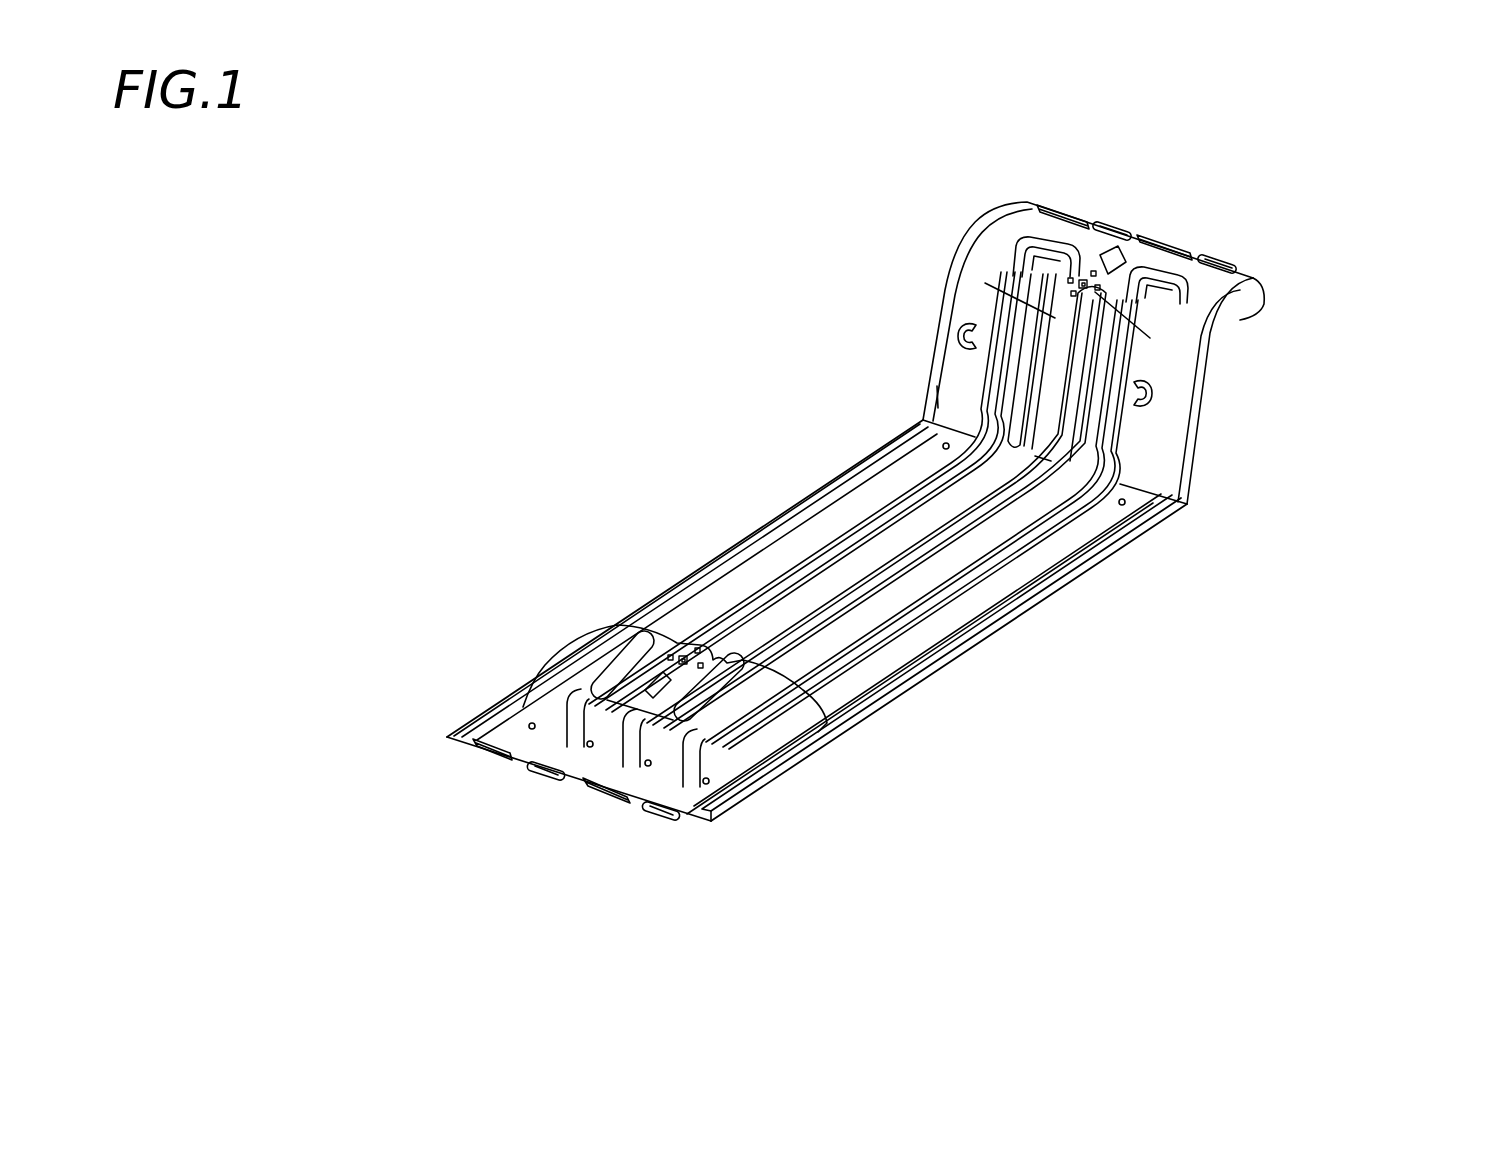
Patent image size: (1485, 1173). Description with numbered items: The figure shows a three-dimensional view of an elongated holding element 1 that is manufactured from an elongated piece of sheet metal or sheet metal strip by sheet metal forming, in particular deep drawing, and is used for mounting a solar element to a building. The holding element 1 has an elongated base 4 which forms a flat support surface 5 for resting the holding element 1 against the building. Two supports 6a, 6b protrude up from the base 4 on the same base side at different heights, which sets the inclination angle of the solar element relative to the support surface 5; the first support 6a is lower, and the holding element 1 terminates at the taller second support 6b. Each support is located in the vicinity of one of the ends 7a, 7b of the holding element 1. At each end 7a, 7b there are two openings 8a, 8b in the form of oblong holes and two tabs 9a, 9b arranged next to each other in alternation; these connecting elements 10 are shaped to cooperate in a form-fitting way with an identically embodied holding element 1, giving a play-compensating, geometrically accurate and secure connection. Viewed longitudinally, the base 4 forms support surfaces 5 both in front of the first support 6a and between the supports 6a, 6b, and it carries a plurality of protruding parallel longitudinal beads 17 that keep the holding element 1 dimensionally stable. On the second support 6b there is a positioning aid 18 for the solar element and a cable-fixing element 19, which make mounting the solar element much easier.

The holding element 1 is at (790, 435).
The base 4 is at (1027, 562).
The support surface 5 is at (972, 657).
The first support 6a is at (607, 655).
The second support 6b is at (998, 255).
The end 7a is at (690, 812).
The end 7b is at (1262, 290).
The opening 8a is at (1065, 203).
The opening 8b is at (1185, 237).
The tab 9a is at (1125, 218).
The tab 9b is at (1233, 255).
The connecting elements 10 is at (1160, 222).
The longitudinal beads 17 is at (925, 593).
The positioning aid 18 is at (1117, 270).
The cable-fixing element 19 is at (960, 332).